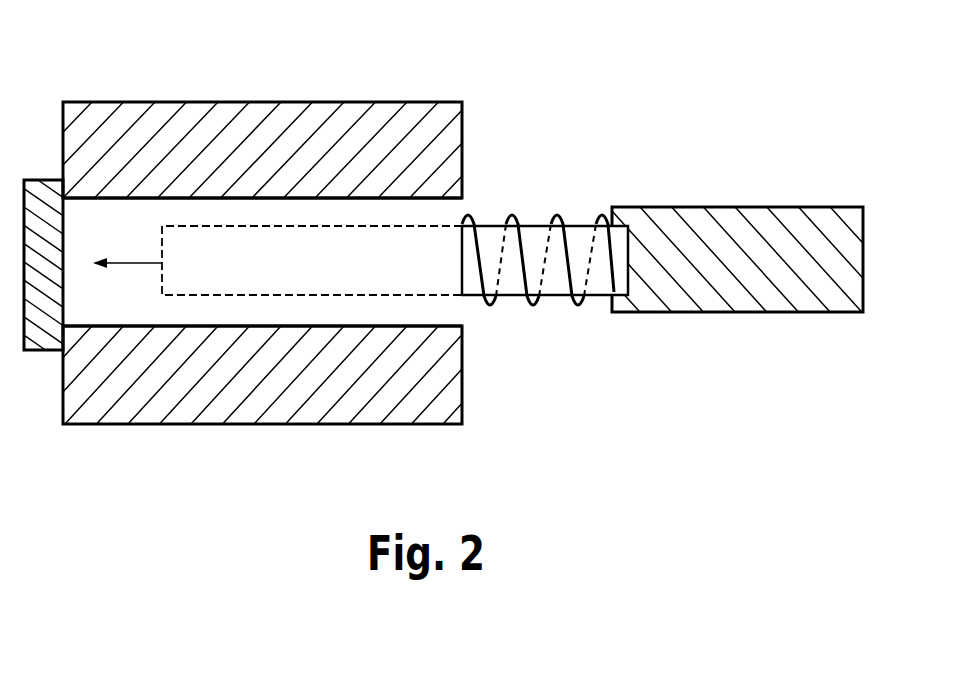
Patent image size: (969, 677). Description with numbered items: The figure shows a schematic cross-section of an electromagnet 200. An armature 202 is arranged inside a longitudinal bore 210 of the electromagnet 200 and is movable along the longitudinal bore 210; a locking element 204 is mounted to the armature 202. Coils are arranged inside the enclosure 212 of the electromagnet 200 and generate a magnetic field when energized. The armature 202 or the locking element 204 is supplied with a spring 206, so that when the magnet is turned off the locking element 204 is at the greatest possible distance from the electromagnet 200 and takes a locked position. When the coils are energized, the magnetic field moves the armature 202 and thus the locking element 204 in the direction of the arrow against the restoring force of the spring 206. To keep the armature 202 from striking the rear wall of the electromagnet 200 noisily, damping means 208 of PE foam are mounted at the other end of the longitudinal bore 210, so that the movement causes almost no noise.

The electromagnet 200 is at (262, 225).
The armature 202 is at (558, 298).
The locking element 204 is at (720, 207).
The spring 206 is at (558, 224).
The damping means 208 is at (40, 178).
The longitudinal bore 210 is at (444, 210).
The enclosure 212 is at (176, 130).